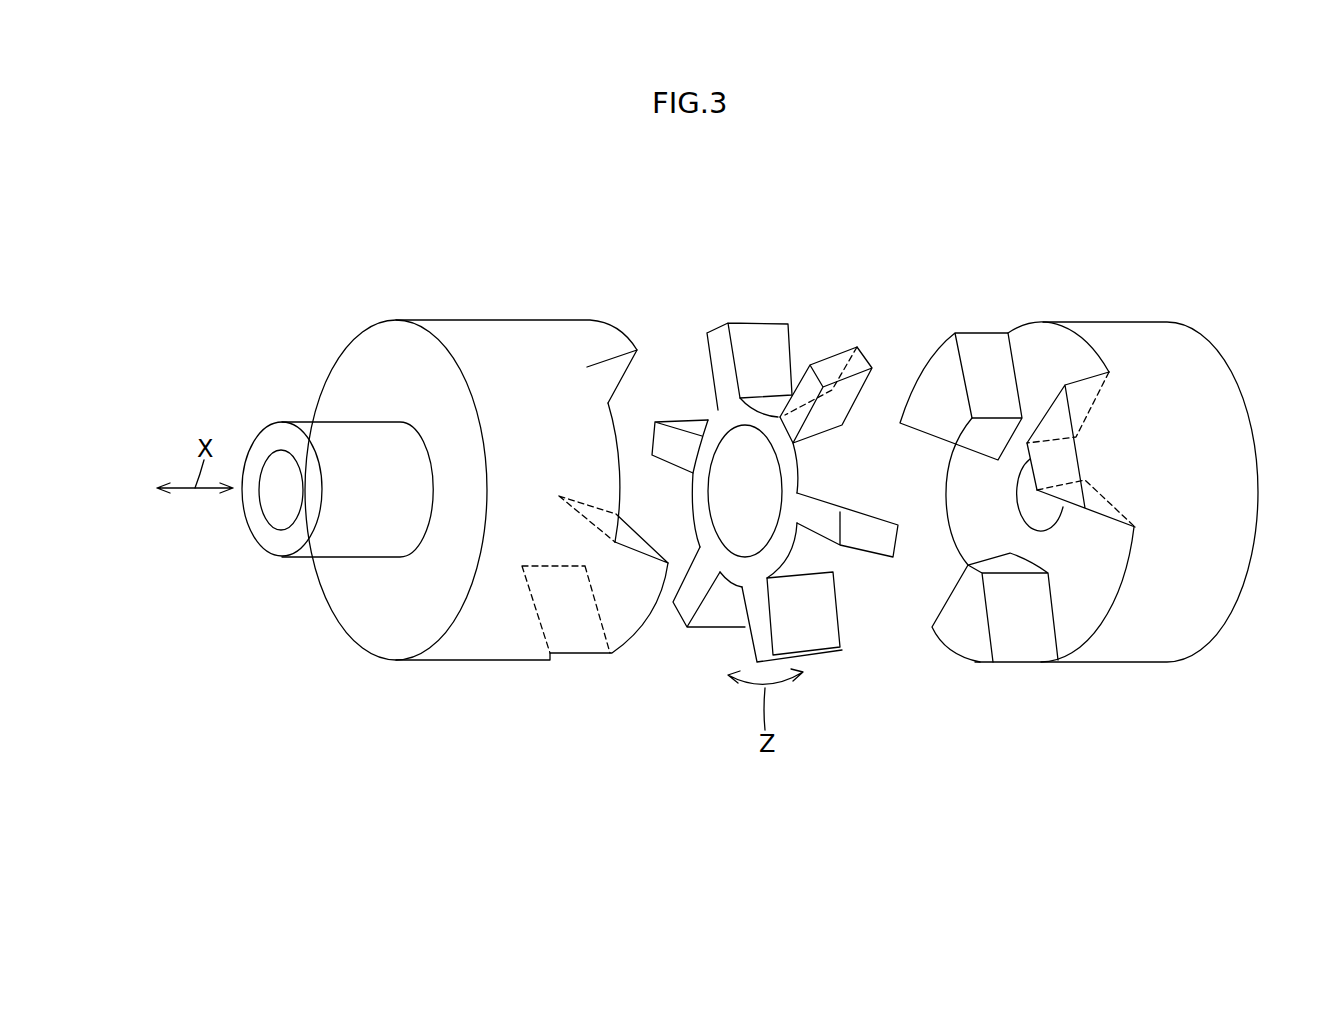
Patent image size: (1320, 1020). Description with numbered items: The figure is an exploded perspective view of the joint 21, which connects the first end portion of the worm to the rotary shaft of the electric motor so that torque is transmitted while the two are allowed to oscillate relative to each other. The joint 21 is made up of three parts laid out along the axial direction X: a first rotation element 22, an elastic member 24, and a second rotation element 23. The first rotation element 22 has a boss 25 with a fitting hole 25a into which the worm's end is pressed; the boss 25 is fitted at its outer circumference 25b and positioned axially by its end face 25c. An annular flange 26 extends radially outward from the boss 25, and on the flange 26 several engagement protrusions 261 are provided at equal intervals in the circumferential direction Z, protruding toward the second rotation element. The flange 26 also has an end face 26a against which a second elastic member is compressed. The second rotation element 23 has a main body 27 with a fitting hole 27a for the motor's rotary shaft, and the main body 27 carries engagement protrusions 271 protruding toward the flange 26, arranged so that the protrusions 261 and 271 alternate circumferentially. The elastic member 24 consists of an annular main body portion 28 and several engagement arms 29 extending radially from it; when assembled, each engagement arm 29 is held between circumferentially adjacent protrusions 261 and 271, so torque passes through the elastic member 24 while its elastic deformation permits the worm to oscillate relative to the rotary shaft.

The joint 21 is at (1000, 259).
The first rotation element 22 is at (470, 307).
The second rotation element 23 is at (1121, 310).
The elastic member 24 is at (755, 312).
The boss 25 is at (348, 430).
The fitting hole 25a is at (280, 502).
The outer circumference 25b is at (353, 528).
The end face 25c is at (258, 447).
The flange 26 is at (487, 647).
The end face 26a is at (393, 620).
The engagement protrusions 261 is at (600, 343).
The main body 27 is at (1217, 588).
The fitting hole 27a is at (1056, 514).
The engagement protrusions 271 is at (932, 382).
The main body portion 28 is at (757, 413).
The engagement arms 29 is at (828, 372).